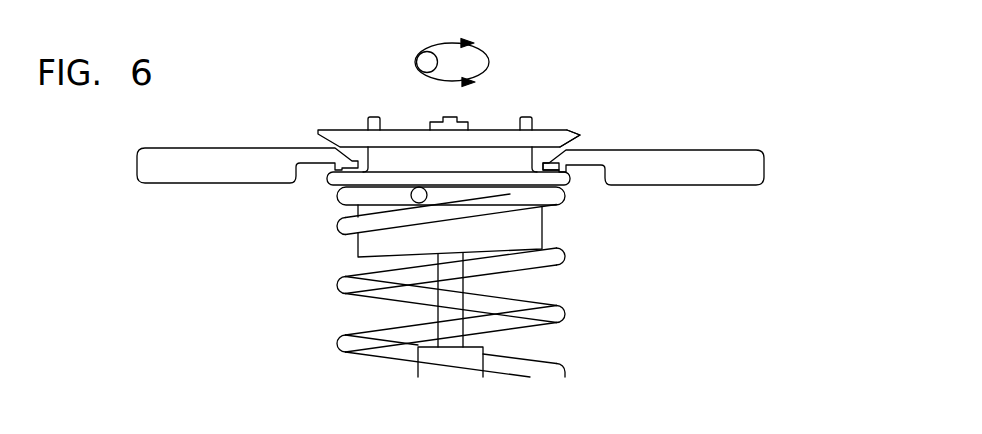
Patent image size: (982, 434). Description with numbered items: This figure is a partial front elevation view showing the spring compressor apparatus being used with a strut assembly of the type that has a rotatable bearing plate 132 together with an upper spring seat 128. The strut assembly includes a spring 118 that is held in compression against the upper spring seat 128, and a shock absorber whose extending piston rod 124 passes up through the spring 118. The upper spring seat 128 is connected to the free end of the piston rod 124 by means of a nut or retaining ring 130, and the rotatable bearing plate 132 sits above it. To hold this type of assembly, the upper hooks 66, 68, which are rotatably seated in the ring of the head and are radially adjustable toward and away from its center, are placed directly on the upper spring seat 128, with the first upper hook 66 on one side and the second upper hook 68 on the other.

The first upper hook 66 is at (172, 167).
The second upper hook 68 is at (717, 175).
The spring 118 is at (553, 315).
The piston rod 124 is at (448, 312).
The upper spring seat 128 is at (563, 178).
The nut or retaining ring 130 is at (468, 120).
The rotatable bearing plate 132 is at (562, 140).